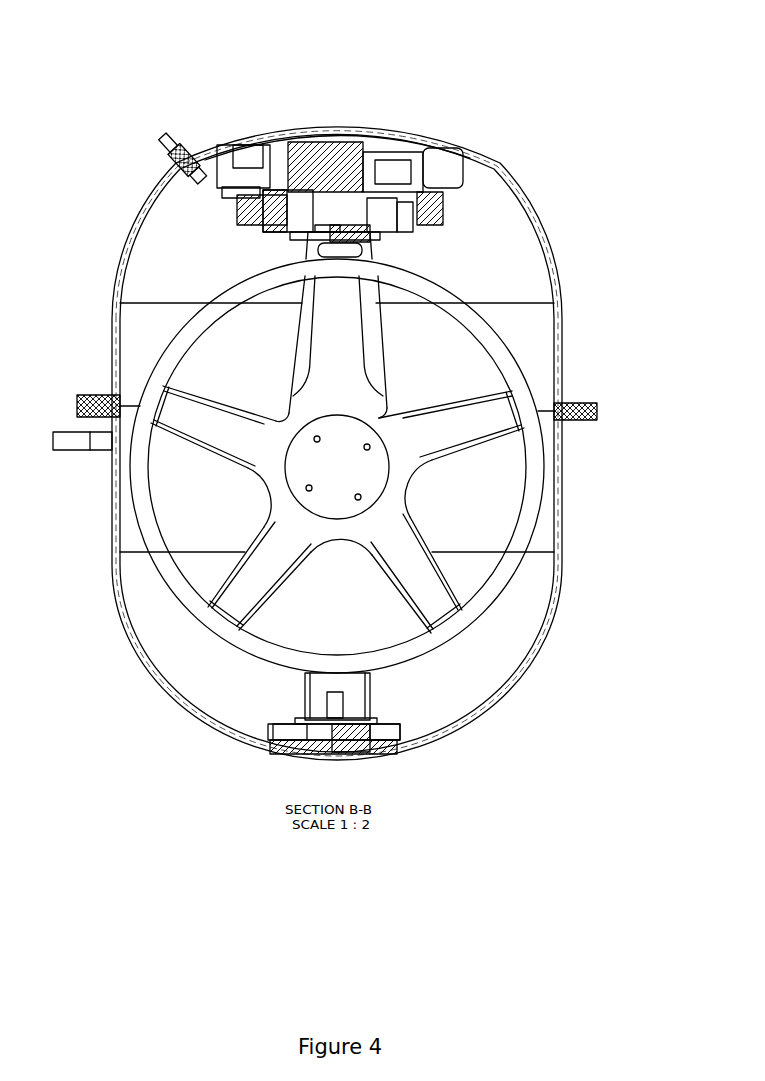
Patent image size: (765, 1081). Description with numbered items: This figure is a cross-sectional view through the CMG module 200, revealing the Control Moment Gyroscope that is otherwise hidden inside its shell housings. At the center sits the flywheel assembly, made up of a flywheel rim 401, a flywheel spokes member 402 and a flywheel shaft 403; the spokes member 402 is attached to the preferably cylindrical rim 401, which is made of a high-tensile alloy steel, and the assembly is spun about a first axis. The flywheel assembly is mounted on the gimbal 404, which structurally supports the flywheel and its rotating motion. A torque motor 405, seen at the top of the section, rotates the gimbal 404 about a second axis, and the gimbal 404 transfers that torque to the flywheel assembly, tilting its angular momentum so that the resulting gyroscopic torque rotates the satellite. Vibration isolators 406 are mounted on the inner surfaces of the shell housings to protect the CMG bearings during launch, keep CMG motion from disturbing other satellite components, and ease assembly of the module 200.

The CMG module 200 is at (536, 176).
The flywheel rim 401 is at (510, 357).
The flywheel spokes member 402 is at (472, 424).
The flywheel shaft 403 is at (338, 467).
The gimbal 404 is at (326, 590).
The torque motor 405 is at (383, 153).
The vibration isolators 406 is at (207, 160).